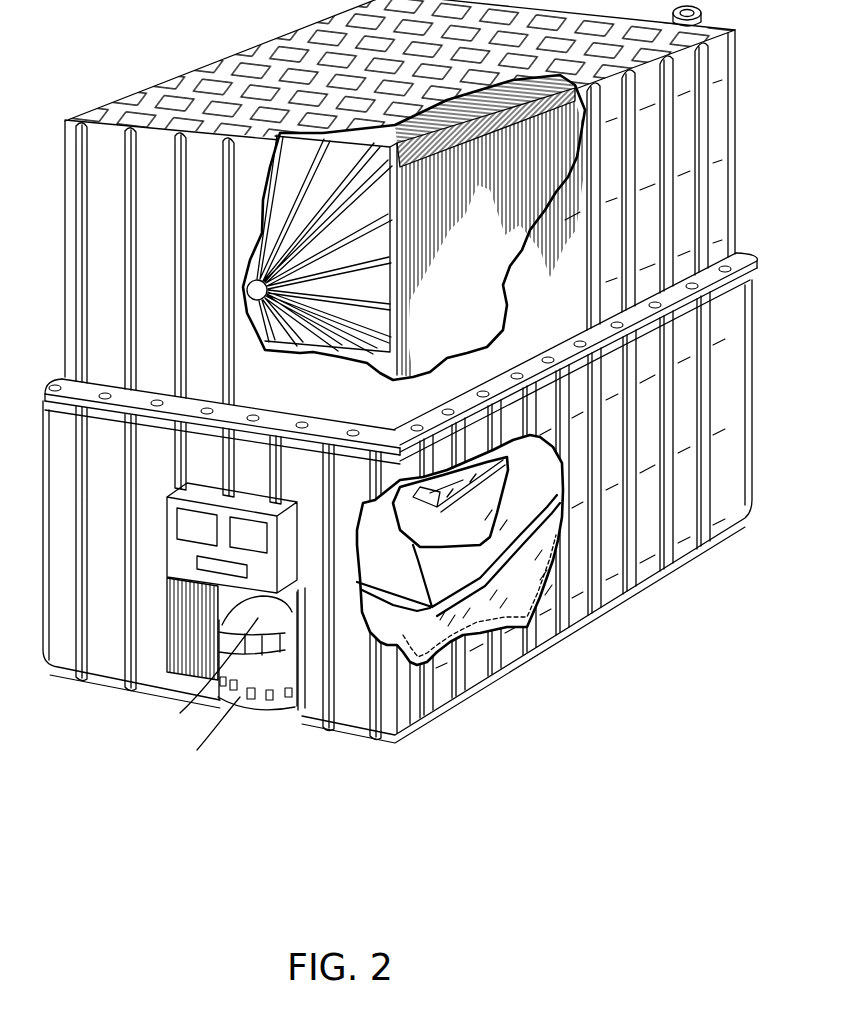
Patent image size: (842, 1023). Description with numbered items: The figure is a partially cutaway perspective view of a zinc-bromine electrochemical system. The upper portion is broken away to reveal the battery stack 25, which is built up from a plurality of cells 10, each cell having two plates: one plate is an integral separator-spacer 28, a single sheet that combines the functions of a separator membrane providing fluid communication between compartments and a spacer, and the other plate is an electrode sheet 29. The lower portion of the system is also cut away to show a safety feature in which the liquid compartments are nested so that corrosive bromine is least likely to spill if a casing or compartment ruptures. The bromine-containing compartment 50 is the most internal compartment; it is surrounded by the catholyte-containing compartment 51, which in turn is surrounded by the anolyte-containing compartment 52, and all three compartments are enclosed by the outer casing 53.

The cells 10 is at (366, 65).
The battery stack 25 is at (478, 291).
The integral separator-spacer 28 is at (413, 130).
The electrode sheet 29 is at (407, 130).
The bromine-containing compartment 50 is at (470, 473).
The catholyte-containing compartment 51 is at (467, 573).
The anolyte-containing compartment 52 is at (440, 700).
The outer casing 53 is at (393, 717).